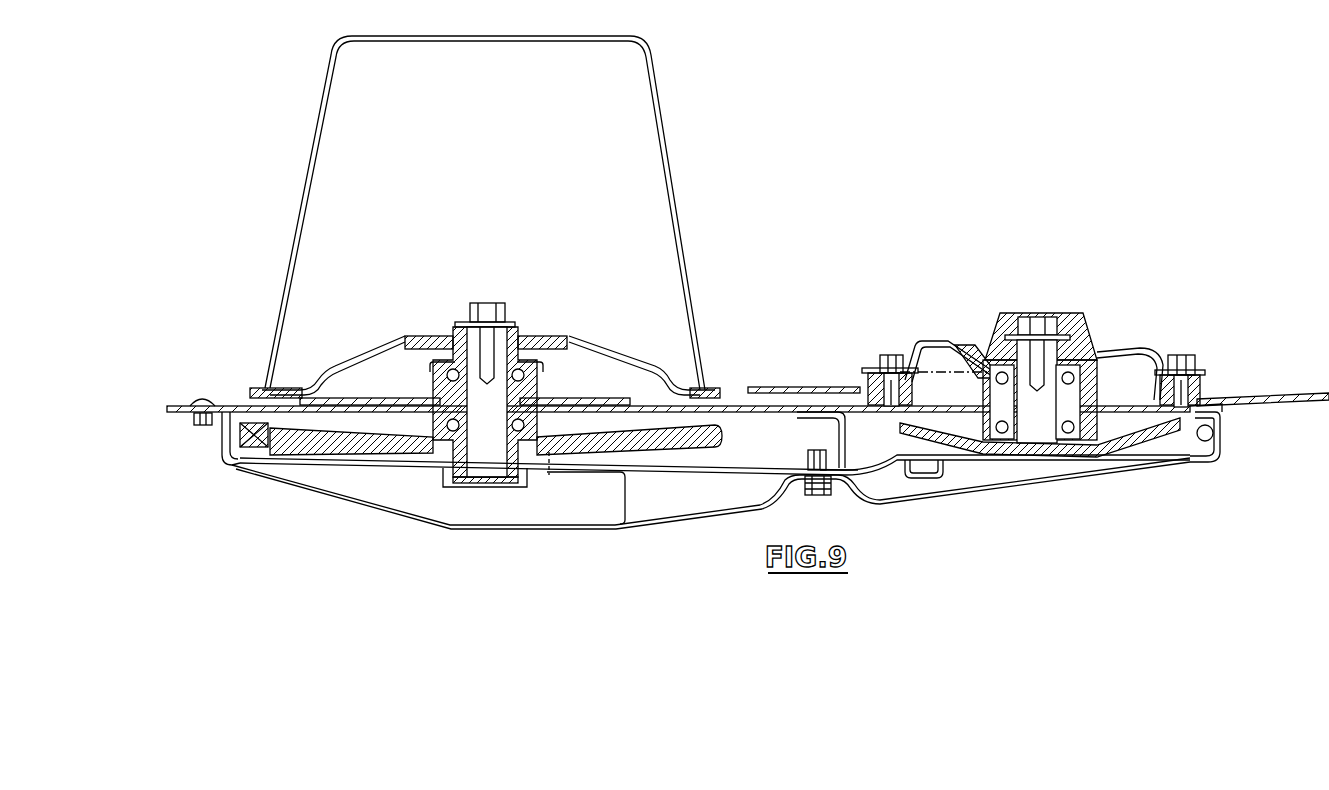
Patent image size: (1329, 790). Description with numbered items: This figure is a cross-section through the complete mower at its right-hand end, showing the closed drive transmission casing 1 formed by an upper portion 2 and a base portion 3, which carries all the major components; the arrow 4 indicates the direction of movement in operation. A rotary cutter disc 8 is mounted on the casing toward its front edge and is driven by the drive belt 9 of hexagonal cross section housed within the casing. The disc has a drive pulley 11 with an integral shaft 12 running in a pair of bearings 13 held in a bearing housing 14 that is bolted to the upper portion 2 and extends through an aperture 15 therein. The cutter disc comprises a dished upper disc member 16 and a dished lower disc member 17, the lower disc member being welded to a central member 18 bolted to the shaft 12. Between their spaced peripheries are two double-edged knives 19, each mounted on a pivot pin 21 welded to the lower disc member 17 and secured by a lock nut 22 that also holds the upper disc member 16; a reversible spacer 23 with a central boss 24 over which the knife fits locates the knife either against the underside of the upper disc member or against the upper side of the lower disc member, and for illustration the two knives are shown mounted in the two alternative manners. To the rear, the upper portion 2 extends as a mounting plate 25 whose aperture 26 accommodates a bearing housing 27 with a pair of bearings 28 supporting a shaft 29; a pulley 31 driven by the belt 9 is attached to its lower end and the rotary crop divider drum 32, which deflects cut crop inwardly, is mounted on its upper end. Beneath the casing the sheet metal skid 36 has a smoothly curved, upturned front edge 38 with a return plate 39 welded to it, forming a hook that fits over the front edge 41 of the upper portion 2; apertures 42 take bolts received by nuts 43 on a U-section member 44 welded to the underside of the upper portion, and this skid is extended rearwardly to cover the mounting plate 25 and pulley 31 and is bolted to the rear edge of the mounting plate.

The drive transmission casing 1 is at (693, 478).
The upper portion 2 is at (770, 413).
The base portion 3 is at (768, 470).
The arrow 4 is at (1320, 460).
The rotary cutter disc 8 is at (1175, 405).
The drive belt 9 is at (238, 462).
The drive pulley 11 is at (985, 435).
The shaft 12 is at (1024, 424).
The bearings 13 is at (1078, 405).
The bearing housing 14 is at (988, 382).
The aperture 15 is at (1092, 447).
The upper disc member 16 is at (1130, 342).
The lower disc member 17 is at (940, 350).
The central member 18 is at (992, 330).
The knife 19 is at (770, 386).
The pivot pin 21 is at (891, 400).
The lock nut 22 is at (880, 355).
The spacer 23 is at (860, 383).
The central boss 24 is at (866, 370).
The mounting plate 25 is at (235, 404).
The aperture 26 is at (540, 396).
The bearing housing 27 is at (440, 395).
The bearings 28 is at (438, 380).
The shaft 29 is at (474, 441).
The pulley 31 is at (565, 457).
The crop divider drum 32 is at (439, 214).
The skid 36 is at (1030, 490).
The upturned front edge 38 is at (1212, 443).
The return plate 39 is at (1224, 407).
The front edge 41 is at (1224, 437).
The apertures 42 is at (816, 497).
The nuts 43 is at (848, 468).
The U-section member 44 is at (846, 445).